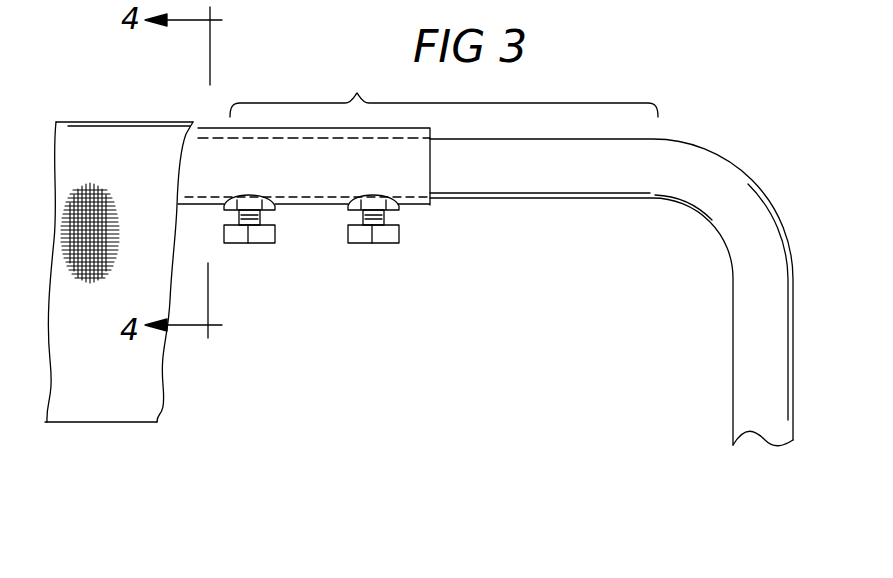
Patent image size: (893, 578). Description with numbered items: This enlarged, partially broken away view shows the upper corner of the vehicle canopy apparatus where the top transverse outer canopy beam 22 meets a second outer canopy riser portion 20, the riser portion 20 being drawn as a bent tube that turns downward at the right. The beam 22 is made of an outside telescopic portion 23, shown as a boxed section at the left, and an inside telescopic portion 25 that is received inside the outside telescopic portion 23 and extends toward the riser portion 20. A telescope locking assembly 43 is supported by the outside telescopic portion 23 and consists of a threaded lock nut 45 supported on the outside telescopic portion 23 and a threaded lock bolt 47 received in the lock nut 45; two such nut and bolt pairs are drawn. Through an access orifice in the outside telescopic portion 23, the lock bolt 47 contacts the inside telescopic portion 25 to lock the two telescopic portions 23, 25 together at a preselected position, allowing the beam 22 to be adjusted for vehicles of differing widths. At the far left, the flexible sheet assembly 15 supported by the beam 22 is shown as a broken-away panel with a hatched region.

The flexible sheet assembly 15 is at (116, 385).
The second outer canopy riser portion 20 is at (755, 380).
The top transverse outer canopy beam 22 is at (444, 88).
The outside telescopic portion 23 is at (318, 178).
The inside telescopic portion 25 is at (507, 180).
The telescope locking assembly 43 is at (244, 250).
The threaded lock nut 45 is at (217, 201).
The threaded lock bolt 47 is at (356, 244).